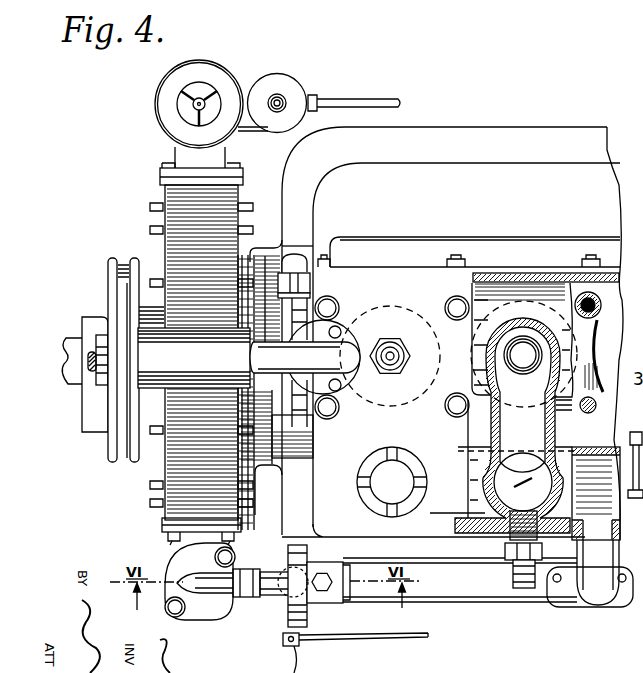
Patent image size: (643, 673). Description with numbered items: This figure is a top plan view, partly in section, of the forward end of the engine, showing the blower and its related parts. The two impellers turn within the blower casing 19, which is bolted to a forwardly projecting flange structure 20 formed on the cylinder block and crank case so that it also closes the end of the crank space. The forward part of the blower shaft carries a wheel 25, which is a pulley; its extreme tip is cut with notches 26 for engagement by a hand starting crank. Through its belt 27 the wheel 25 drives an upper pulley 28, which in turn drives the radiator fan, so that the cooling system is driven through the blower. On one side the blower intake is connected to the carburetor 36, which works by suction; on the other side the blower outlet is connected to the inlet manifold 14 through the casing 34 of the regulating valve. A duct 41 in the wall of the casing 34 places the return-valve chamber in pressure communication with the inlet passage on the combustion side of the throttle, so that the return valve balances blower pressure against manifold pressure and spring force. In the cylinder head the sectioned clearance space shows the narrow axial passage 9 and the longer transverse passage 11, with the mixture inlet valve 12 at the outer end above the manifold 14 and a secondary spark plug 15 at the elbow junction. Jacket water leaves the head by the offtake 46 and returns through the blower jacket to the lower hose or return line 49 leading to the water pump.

The carburetor 36 is at (229, 65).
The blower casing 19 is at (182, 192).
The upper pulley 28 is at (102, 309).
The notches 26 is at (76, 380).
The belt 27 is at (118, 394).
The wheel 25 is at (108, 454).
The lower hose or return line 49 is at (307, 265).
The offtake 46 is at (320, 354).
The secondary spark plug 15 is at (395, 352).
The axial portion or passage 9 is at (527, 352).
The transversely extending passage 11 is at (512, 425).
The flange structure 20 is at (320, 418).
The mixture inlet valve 12 is at (506, 494).
The inlet manifold 14 is at (593, 487).
The casing of the regulating valve 34 is at (196, 610).
The duct 41 is at (276, 584).